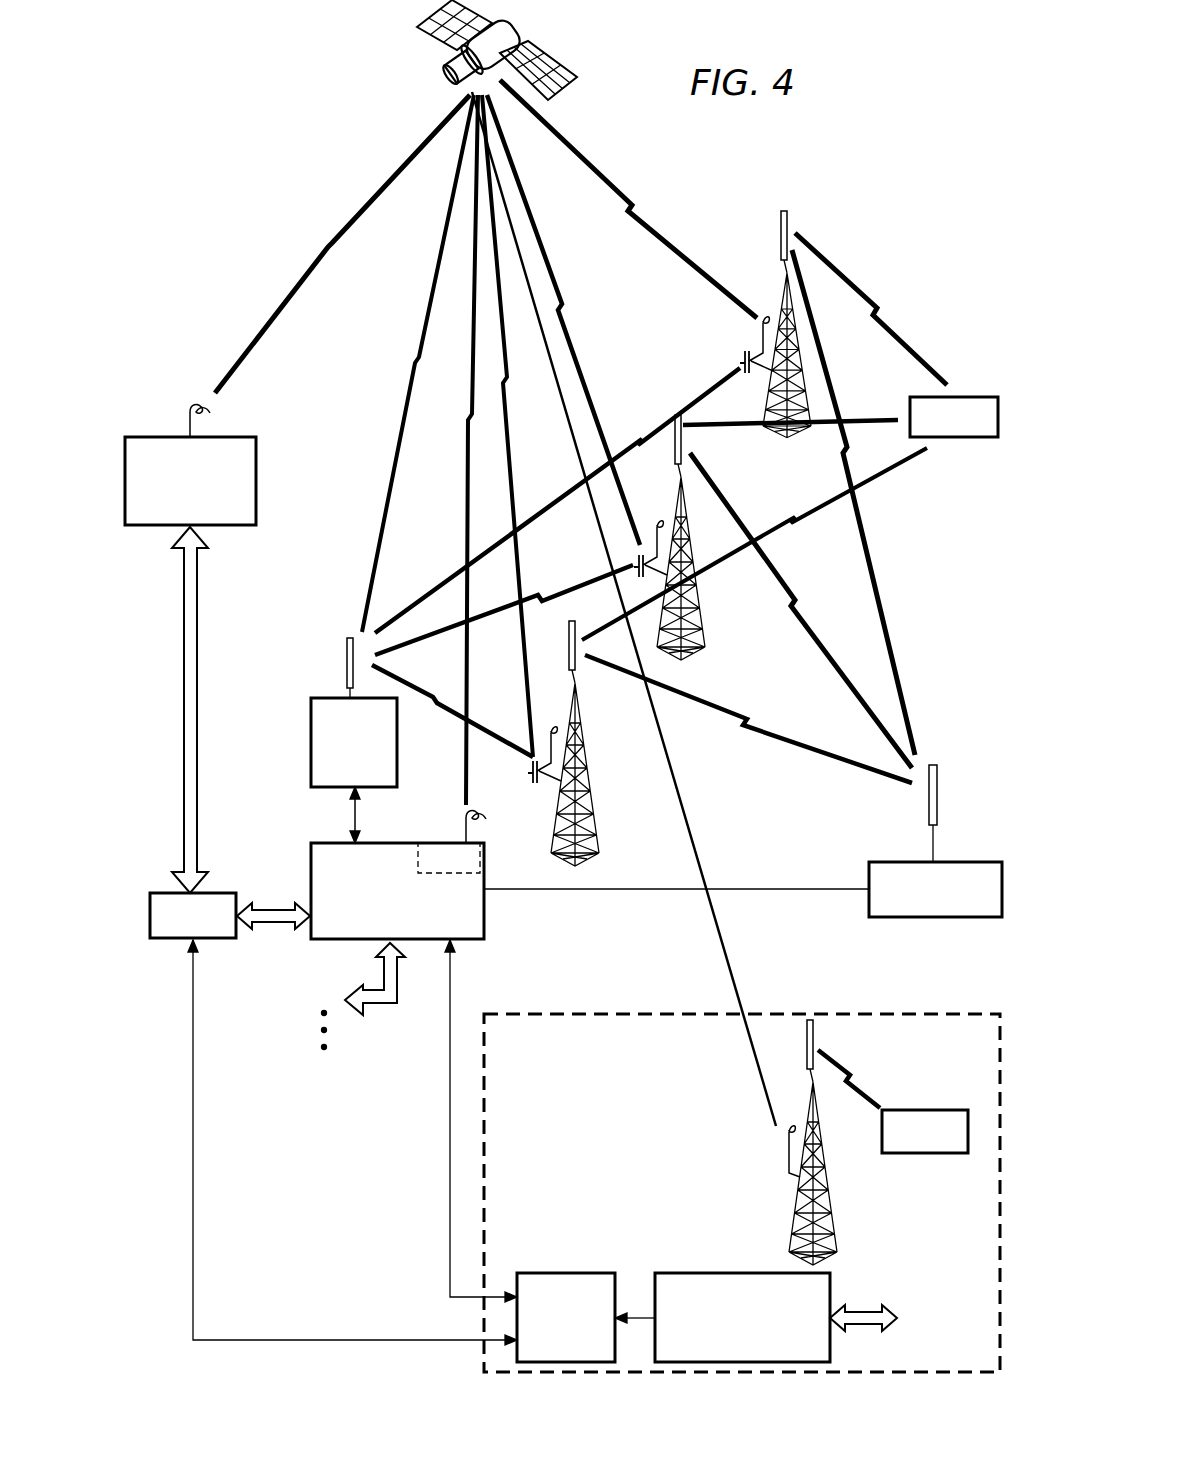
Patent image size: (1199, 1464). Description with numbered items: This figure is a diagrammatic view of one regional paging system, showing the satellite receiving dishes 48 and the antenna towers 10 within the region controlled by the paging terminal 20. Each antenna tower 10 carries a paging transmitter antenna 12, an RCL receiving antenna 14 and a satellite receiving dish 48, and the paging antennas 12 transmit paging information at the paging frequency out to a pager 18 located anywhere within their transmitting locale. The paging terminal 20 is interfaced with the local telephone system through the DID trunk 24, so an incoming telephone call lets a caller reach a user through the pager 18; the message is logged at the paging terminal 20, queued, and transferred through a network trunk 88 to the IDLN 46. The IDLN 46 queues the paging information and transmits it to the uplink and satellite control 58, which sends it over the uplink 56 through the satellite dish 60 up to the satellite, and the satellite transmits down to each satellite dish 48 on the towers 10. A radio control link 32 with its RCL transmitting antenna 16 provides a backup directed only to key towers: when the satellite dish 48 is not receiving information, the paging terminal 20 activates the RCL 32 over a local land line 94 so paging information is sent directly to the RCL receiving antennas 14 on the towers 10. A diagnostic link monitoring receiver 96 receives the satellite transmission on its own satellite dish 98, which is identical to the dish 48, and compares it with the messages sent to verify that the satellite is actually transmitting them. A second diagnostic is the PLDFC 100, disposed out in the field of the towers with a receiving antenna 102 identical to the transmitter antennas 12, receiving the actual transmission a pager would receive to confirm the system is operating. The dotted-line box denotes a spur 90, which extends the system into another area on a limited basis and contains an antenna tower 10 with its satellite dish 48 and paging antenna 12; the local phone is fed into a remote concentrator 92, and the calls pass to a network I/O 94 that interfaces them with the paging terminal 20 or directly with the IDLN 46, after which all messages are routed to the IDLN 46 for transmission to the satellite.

The antenna tower 10 is at (772, 386).
The paging transmitter antenna 12 is at (788, 234).
The RCL receiving antenna 14 is at (751, 353).
The RCL transmitting antenna 16 is at (345, 668).
The pager 18 is at (956, 438).
The paging terminal 20 is at (556, 14).
The DID trunk 24 is at (384, 1016).
The radio control link (RCL) 32 is at (397, 747).
The IDLN 46 is at (175, 940).
The satellite receiving dish 48 is at (756, 323).
The uplink 56 is at (384, 196).
The uplink and satellite control 58 is at (160, 527).
The satellite dish 60 is at (188, 408).
The network trunk 88 is at (258, 906).
The spur 90 is at (922, 1014).
The remote concentrator (RTC) 92 is at (745, 1273).
The network I/O 94 is at (350, 818).
The diagnostic link monitoring receiver (DLMR) 96 is at (484, 862).
The satellite dish 98 is at (454, 818).
The PLDFC 100 is at (936, 918).
The receiving antenna 102 is at (930, 807).